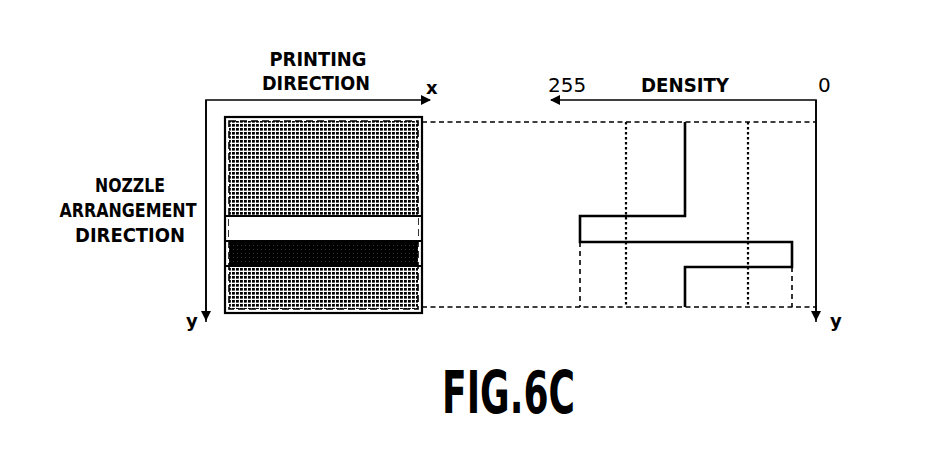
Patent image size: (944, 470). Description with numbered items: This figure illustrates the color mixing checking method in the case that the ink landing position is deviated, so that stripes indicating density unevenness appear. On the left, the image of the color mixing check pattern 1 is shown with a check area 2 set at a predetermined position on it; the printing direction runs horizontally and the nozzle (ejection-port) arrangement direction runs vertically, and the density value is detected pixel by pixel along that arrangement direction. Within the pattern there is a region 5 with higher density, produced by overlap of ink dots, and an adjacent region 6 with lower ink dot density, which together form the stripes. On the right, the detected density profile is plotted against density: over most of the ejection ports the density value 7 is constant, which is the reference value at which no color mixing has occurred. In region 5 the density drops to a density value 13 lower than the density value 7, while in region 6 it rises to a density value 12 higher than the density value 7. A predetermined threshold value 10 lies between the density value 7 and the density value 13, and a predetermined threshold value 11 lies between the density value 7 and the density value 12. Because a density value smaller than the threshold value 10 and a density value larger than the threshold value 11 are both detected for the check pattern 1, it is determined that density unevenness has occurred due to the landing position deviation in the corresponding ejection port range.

The color mixing check pattern 1 is at (335, 310).
The check area 2 is at (277, 308).
The region with higher density 5 is at (408, 255).
The region with lower density 6 is at (406, 228).
The density value 7 is at (685, 290).
The threshold value 10 is at (748, 290).
The threshold value 11 is at (626, 290).
The density value 12 is at (580, 290).
The density value 13 is at (792, 290).